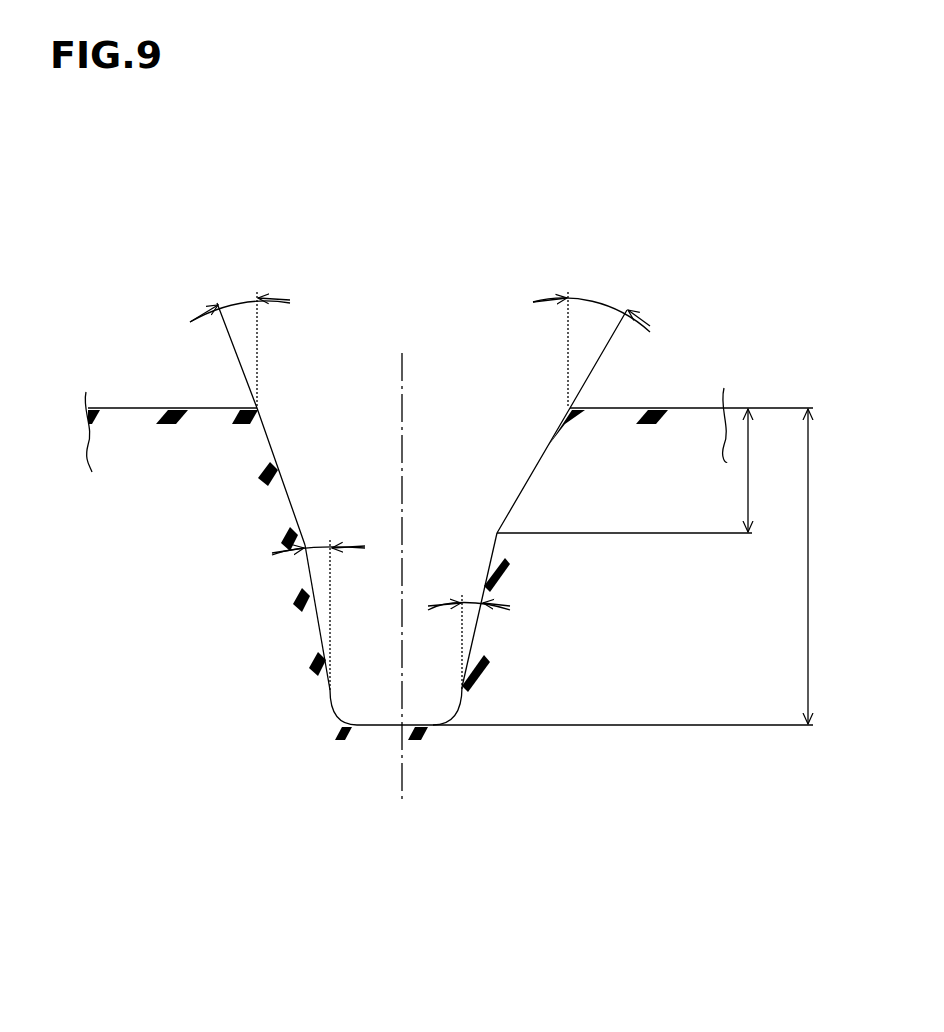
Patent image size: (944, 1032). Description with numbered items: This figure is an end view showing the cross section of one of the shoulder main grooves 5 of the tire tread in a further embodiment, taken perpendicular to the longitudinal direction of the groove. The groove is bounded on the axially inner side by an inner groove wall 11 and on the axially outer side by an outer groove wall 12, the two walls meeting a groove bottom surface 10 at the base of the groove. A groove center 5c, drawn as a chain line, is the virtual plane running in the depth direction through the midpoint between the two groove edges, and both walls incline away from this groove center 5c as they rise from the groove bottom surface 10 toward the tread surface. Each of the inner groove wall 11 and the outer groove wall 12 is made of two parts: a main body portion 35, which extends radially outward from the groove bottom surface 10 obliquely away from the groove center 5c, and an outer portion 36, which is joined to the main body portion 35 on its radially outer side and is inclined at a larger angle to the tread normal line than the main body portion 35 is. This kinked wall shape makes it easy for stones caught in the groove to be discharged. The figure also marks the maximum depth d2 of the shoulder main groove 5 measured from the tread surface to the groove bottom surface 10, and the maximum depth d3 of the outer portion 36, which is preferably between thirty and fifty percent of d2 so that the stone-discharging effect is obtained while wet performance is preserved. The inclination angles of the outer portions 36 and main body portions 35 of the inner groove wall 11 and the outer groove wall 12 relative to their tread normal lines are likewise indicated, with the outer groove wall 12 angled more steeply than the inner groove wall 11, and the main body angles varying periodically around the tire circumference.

The shoulder main groove 5 is at (362, 443).
The groove center 5c is at (402, 378).
The groove bottom surface 10 is at (388, 723).
The inner groove wall 11 is at (152, 522).
The outer groove wall 12 is at (533, 474).
The main body portion 35 is at (320, 605).
The outer portion 36 is at (293, 494).
The maximum depth of the shoulder main groove d2 is at (643, 567).
The maximum depth of the outer portion d3 is at (646, 471).